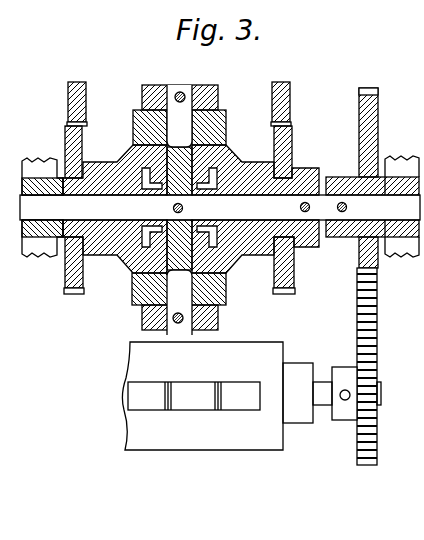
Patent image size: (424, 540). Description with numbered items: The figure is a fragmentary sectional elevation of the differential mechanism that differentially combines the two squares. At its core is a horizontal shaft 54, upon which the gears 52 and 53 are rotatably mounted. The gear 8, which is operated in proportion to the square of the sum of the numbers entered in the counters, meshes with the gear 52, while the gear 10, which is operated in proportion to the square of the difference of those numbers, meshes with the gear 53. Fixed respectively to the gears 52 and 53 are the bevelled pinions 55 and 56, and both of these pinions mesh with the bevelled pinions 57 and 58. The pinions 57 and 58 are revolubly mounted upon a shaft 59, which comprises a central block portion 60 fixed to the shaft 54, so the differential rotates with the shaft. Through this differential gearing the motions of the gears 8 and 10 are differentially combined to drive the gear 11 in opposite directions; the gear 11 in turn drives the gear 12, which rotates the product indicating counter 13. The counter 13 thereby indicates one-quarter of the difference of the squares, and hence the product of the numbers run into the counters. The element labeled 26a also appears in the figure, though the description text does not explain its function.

The horizontal shaft 54 is at (22, 210).
The bearing housing 26a is at (0, 127).
The gear 10 is at (86, 100).
The gear 8 is at (292, 102).
The gear 53 is at (65, 277).
The gear 52 is at (294, 267).
The bevelled pinion 56 is at (98, 162).
The bevelled pinion 57 is at (226, 127).
The bevelled pinion 55 is at (257, 257).
The bevelled pinion 58 is at (133, 280).
The shaft 59 is at (181, 90).
The central block portion 60 is at (183, 211).
The gear 11 is at (379, 117).
The gear 12 is at (377, 358).
The product indicating counter 13 is at (208, 445).